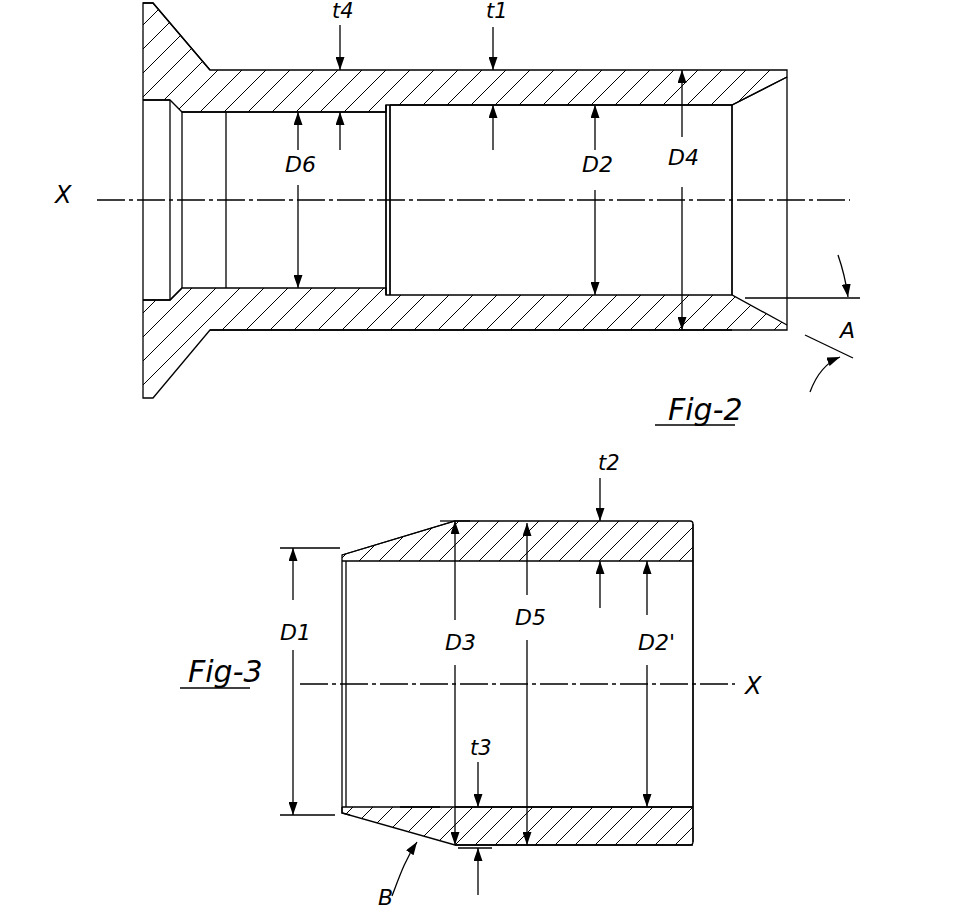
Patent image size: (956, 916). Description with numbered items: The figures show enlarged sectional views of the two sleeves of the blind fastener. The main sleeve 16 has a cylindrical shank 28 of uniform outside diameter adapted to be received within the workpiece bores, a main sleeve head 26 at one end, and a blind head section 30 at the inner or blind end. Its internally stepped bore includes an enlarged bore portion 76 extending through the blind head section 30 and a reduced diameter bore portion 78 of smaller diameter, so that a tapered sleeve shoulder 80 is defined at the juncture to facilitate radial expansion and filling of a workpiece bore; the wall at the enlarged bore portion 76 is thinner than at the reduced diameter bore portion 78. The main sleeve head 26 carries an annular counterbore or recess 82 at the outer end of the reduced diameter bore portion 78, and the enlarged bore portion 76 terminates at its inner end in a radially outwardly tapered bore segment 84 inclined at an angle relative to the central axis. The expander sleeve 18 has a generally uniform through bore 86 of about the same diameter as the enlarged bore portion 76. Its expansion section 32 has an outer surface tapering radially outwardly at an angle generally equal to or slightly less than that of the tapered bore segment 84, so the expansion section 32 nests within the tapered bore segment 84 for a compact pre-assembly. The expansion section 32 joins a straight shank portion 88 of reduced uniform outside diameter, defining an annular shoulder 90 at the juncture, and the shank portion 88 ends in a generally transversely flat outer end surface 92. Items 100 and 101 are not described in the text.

In FIG. 2, the main sleeve 16 is at (180, 405).
In FIG. 3, the expander sleeve 18 is at (554, 480).
In FIG. 2, the main sleeve head 26 is at (153, 32).
In FIG. 2, the cylindrical shank 28 is at (738, 352).
In FIG. 2, the blind head section 30 is at (788, 56).
In FIG. 3, the blind head section 30 is at (184, 897).
In FIG. 3, the expansion section 32 is at (402, 545).
In FIG. 2, the enlarged bore portion 76 is at (437, 111).
In FIG. 2, the reduced diameter bore portion 78 is at (247, 114).
In FIG. 2, the tapered sleeve shoulder 80 is at (388, 112).
In FIG. 2, the annular counterbore or recess 82 is at (155, 298).
In FIG. 2, the tapered bore segment 84 is at (752, 90).
In FIG. 3, the through bore 86 is at (607, 808).
In FIG. 3, the straight shank portion 88 is at (691, 865).
In FIG. 3, the annular shoulder 90 is at (457, 522).
In FIG. 3, the outer end surface 92 is at (693, 547).
In FIG. 3, the sleeve inner edge 100 is at (385, 755).
In FIG. 3, the sleeve lip 101 is at (345, 814).